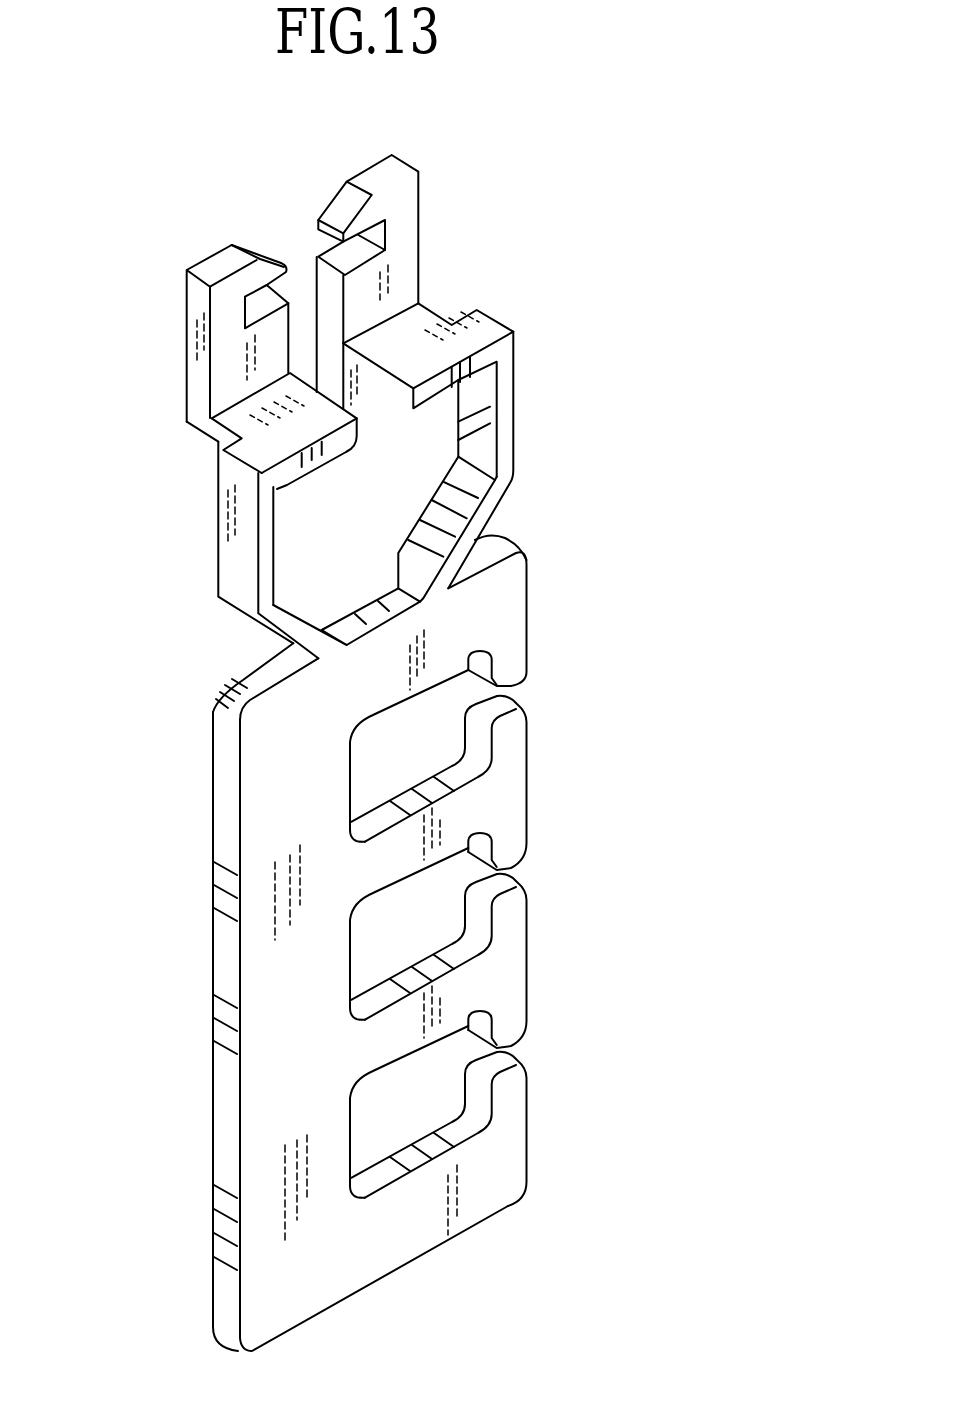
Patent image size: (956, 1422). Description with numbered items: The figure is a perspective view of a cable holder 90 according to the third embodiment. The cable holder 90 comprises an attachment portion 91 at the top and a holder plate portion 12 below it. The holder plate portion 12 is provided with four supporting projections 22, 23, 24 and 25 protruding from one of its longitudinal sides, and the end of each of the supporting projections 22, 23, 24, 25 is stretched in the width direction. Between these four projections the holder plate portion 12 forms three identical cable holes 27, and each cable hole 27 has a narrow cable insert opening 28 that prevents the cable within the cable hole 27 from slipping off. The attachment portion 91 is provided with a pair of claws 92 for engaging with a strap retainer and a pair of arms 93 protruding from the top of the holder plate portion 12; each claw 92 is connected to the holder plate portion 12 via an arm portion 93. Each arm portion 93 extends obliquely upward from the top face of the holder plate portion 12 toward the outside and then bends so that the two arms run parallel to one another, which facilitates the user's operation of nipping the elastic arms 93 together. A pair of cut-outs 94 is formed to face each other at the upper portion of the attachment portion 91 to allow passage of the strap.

The holder plate portion 12 is at (206, 739).
The supporting projection 22 is at (502, 603).
The supporting projection 23 is at (502, 797).
The supporting projection 24 is at (502, 973).
The supporting projection 25 is at (502, 1133).
The cable hole 27 is at (366, 797).
The cable insert opening 28 is at (500, 691).
The cable holder 90 is at (484, 1253).
The attachment portion 91 is at (173, 265).
The claw 92 is at (371, 383).
The arm portion 93 is at (505, 408).
The cut-out 94 is at (247, 321).